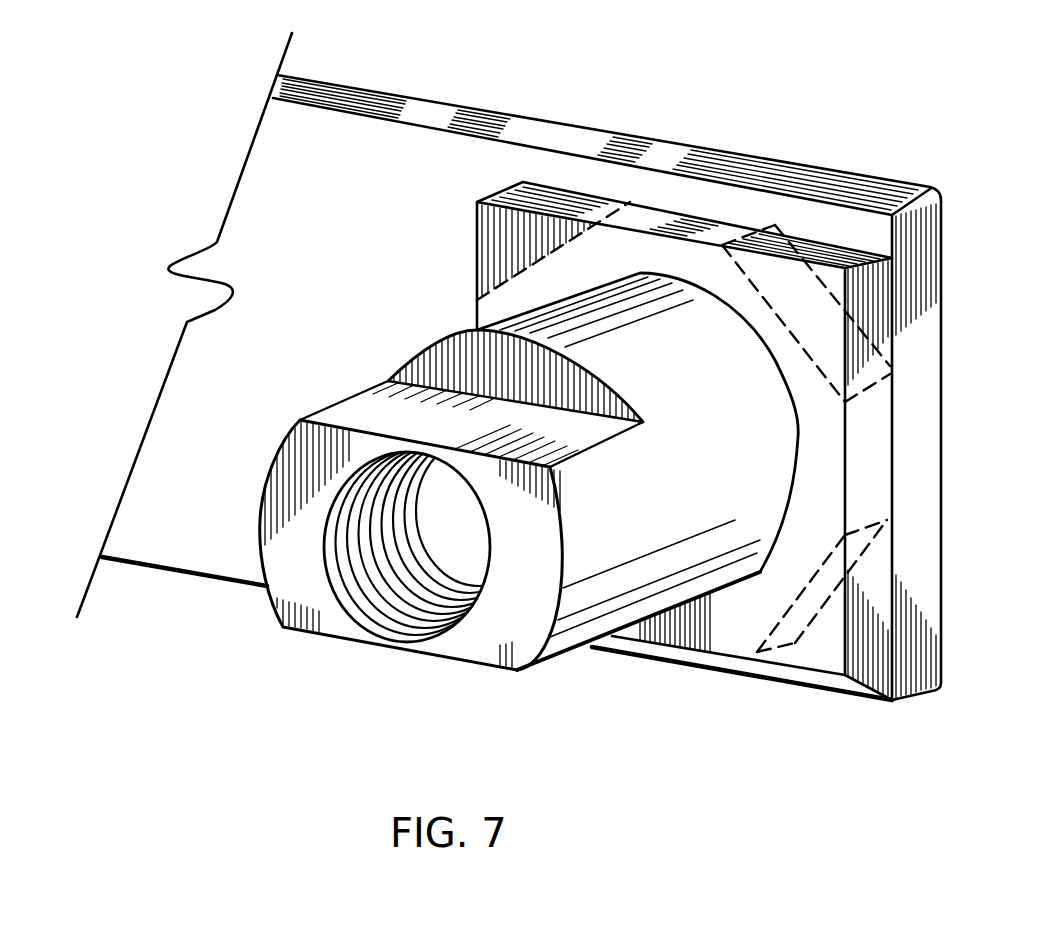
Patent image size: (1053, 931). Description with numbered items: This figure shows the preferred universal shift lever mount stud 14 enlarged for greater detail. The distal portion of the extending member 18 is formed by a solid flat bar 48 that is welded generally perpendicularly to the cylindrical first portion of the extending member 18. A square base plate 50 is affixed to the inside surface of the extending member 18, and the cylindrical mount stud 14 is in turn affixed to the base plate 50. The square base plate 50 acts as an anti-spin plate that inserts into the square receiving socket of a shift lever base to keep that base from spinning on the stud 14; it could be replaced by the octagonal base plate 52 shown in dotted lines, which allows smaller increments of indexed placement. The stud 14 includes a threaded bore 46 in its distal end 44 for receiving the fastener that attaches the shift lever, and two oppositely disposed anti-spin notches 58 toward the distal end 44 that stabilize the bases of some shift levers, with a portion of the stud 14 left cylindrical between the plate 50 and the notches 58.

The universal shift lever mount stud 14 is at (652, 530).
The extending member 18 is at (867, 182).
The distal end 44 is at (300, 568).
The threaded bore 46 is at (403, 580).
The flat bar 48 is at (525, 118).
The square base plate 50 is at (870, 463).
The octagonal base plate 52 is at (867, 370).
The anti-spin notches 58 is at (390, 405).